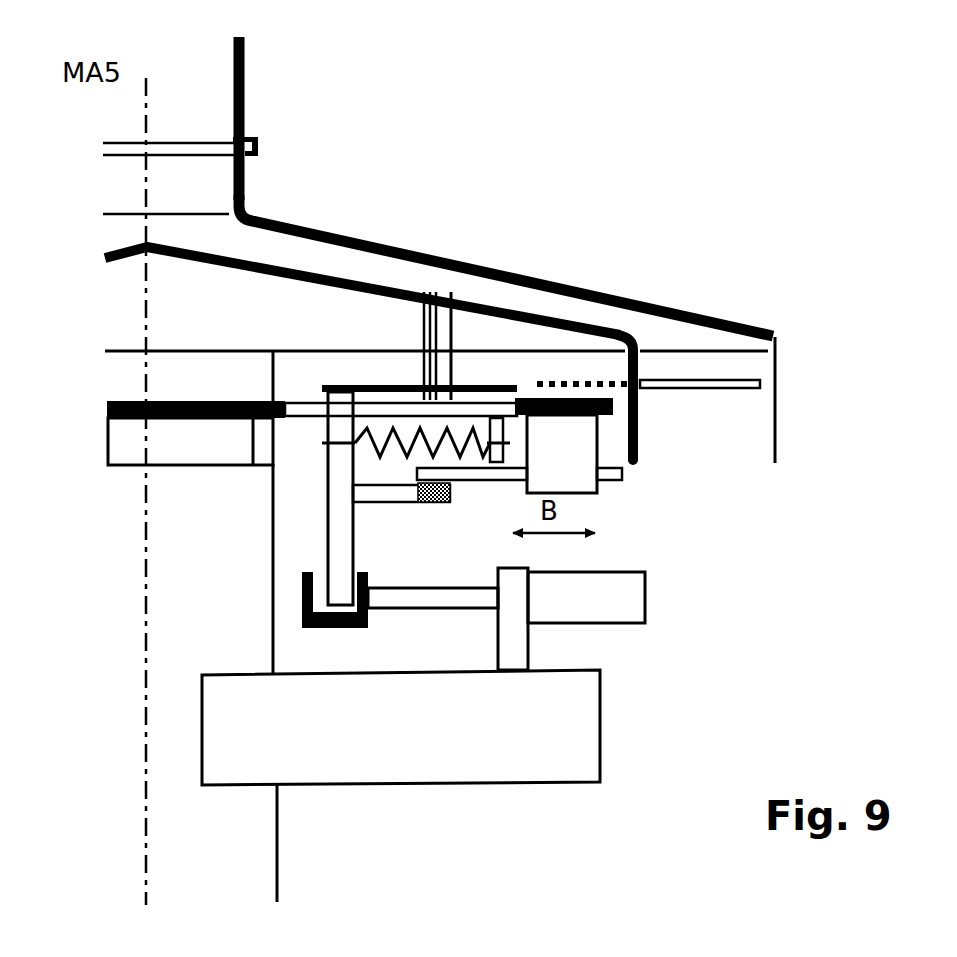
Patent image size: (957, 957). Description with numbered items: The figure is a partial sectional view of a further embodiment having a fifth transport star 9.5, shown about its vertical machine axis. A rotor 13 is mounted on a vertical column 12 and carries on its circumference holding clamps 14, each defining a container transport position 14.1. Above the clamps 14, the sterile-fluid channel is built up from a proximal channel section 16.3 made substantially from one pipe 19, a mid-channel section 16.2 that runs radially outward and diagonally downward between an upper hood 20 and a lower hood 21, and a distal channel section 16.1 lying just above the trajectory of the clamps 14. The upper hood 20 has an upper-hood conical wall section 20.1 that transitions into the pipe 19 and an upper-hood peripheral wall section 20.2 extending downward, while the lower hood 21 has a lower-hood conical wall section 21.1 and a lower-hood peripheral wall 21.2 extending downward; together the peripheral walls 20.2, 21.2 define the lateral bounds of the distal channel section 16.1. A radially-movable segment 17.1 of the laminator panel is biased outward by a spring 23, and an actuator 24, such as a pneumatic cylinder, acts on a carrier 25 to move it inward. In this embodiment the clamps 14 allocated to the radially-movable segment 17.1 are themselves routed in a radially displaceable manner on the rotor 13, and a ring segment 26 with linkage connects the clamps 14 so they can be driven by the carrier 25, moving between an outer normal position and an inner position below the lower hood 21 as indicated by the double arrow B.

The fifth transport star 9.5 is at (738, 182).
The vertical column 12 is at (250, 835).
The rotor 13 is at (310, 408).
The holding clamp 14 is at (622, 473).
The container transport position 14.1 is at (722, 546).
The distal channel section 16.1 is at (740, 413).
The mid-channel section 16.2 is at (393, 263).
The proximal channel section 16.3 is at (200, 112).
The radially-movable segment 17.1 is at (698, 380).
The pipe 19 is at (243, 67).
The upper hood 20 is at (367, 237).
The upper-hood conical wall section 20.1 is at (557, 282).
The upper-hood peripheral wall section 20.2 is at (772, 413).
The lower hood 21 is at (253, 278).
The lower-hood conical wall section 21.1 is at (438, 297).
The lower-hood peripheral wall 21.2 is at (638, 428).
The spring 23 is at (395, 430).
The actuator 24 is at (603, 600).
The carrier 25 is at (430, 502).
The ring segment 26 is at (377, 503).